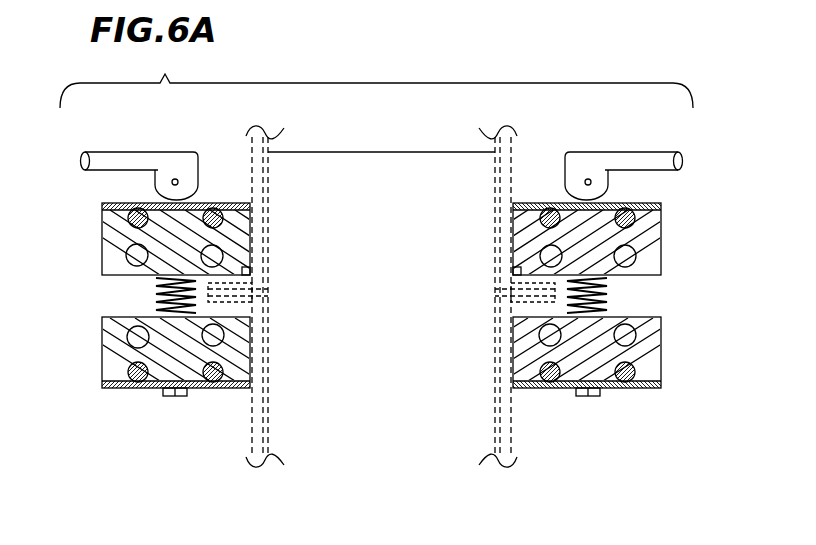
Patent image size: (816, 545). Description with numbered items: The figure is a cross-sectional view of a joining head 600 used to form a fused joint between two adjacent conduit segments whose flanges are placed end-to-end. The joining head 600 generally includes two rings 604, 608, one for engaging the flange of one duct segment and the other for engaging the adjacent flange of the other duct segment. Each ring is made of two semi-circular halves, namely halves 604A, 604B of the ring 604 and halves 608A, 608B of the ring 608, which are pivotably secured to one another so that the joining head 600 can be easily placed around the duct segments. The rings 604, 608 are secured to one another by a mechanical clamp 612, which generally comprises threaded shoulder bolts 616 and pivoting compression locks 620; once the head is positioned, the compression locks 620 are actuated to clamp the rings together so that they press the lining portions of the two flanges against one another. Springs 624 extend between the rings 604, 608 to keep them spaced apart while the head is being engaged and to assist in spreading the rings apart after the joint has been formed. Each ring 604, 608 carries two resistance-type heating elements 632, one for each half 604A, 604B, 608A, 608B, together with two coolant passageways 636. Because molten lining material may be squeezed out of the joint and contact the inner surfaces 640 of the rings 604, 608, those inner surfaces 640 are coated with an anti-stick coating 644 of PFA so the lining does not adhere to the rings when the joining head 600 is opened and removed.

The joining head 600 is at (623, 450).
The ring 604 is at (96, 282).
The semi-circular half 604A is at (102, 240).
The semi-circular half 604B is at (661, 240).
The ring 608 is at (138, 400).
The semi-circular half 608A is at (102, 361).
The semi-circular half 608B is at (661, 361).
The mechanical clamp 612 is at (178, 140).
The threaded shoulder bolt 616 is at (175, 397).
The pivoting compression lock 620 is at (113, 158).
The spring 624 is at (158, 305).
The resistance-type heating element 632 is at (222, 216).
The coolant passageway 636 is at (220, 256).
The inner surface 640 is at (245, 297).
The anti-stick coating 644 is at (248, 273).